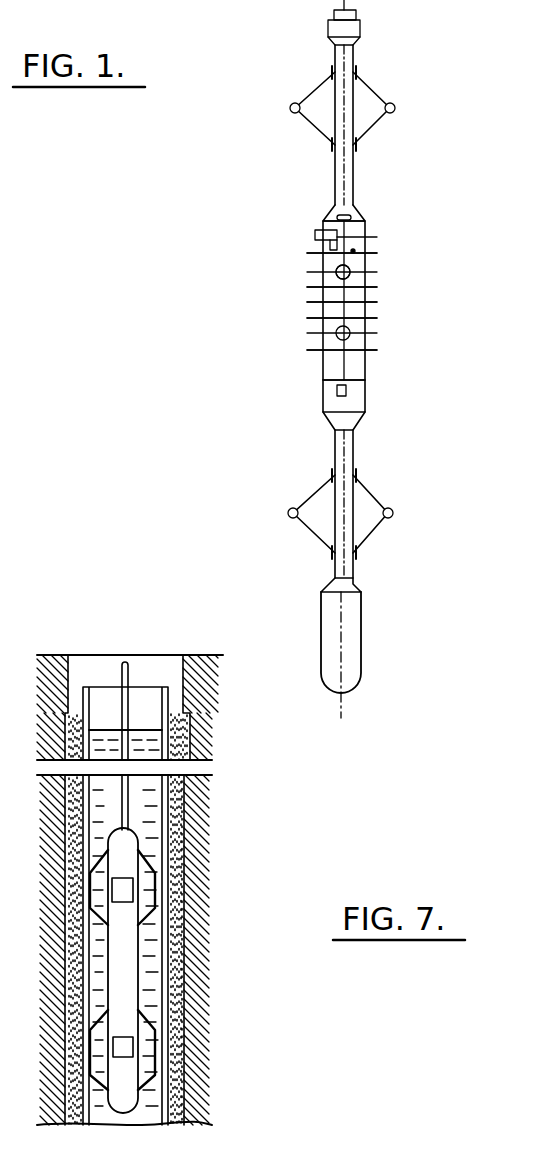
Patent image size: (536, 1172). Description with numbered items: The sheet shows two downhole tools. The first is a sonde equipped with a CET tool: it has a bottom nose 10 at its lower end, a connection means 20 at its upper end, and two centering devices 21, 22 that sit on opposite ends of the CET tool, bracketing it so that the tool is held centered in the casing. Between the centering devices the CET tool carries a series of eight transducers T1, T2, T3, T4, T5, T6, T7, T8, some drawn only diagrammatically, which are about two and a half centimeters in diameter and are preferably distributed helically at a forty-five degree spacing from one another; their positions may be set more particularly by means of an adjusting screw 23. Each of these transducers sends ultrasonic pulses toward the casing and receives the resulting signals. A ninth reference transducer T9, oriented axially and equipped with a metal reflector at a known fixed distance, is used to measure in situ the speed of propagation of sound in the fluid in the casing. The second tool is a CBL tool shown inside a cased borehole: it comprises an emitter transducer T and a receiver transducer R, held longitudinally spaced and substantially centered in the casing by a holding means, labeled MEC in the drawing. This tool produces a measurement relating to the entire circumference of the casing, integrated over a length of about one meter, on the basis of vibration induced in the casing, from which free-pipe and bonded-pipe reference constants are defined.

In FIG. 1, the bottom nose 10 is at (346, 655).
In FIG. 1, the connection means 20 is at (360, 20).
In FIG. 1, the centering device 21 is at (394, 513).
In FIG. 1, the centering device 22 is at (396, 108).
In FIG. 1, the adjusting screw 23 is at (356, 251).
In FIG. 1, the transducer T1 is at (316, 234).
In FIG. 1, the transducer T2 is at (322, 251).
In FIG. 1, the transducer T3 is at (328, 272).
In FIG. 1, the transducer T4 is at (330, 287).
In FIG. 1, the transducer T5 is at (332, 302).
In FIG. 1, the transducer T6 is at (332, 318).
In FIG. 1, the transducer T7 is at (338, 350).
In FIG. 1, the transducer T8 is at (328, 378).
In FIG. 1, the reference transducer T9 is at (323, 392).
In FIG. 7, the emitter transducer T is at (122, 890).
In FIG. 7, the receiver transducer R is at (123, 1047).
In FIG. 7, the measuring electronic cartridge MEC is at (158, 903).